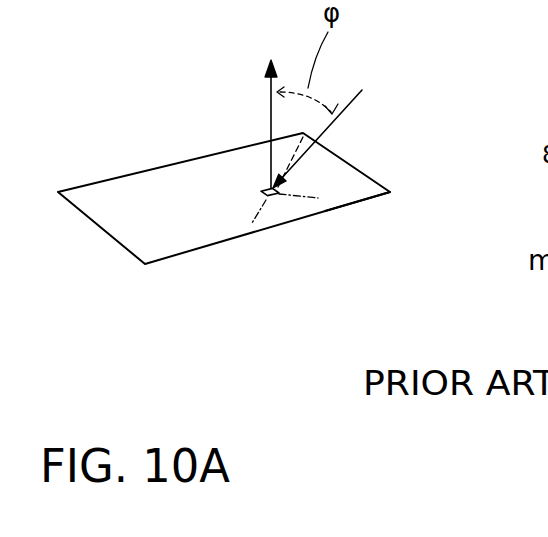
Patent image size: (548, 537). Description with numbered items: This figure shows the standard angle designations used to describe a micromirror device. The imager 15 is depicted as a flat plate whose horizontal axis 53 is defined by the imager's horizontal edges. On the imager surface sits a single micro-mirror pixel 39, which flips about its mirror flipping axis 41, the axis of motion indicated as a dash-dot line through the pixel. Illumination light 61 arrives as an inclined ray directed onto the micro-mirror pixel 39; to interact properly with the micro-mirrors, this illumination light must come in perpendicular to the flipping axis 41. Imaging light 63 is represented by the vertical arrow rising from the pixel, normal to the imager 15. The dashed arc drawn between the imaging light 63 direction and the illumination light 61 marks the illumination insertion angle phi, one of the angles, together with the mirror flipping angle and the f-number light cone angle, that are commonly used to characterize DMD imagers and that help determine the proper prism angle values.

The imager 15 is at (140, 230).
The single micro-mirror pixel 39 is at (266, 193).
The mirror flipping axis 41 is at (262, 213).
The horizontal axis 53 is at (325, 213).
The illumination light 61 is at (318, 140).
The imaging light 63 is at (268, 110).